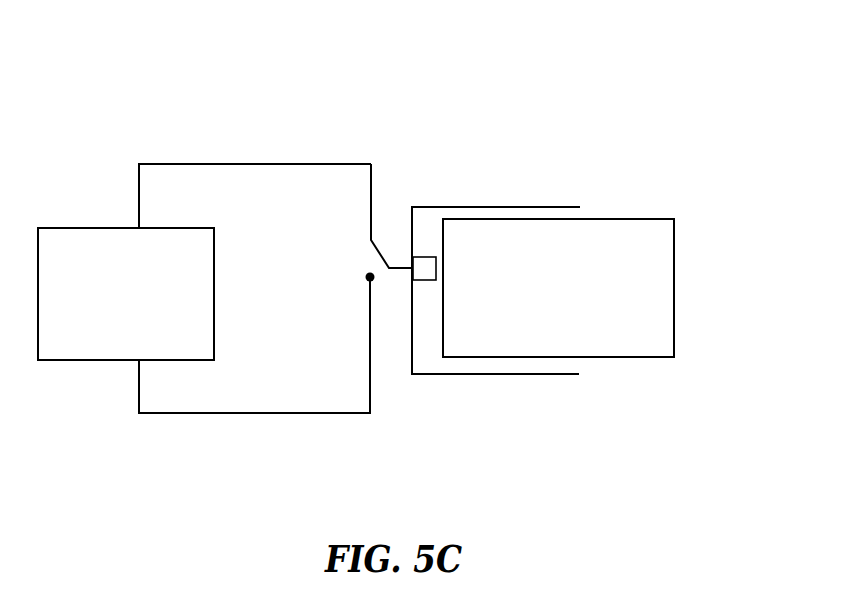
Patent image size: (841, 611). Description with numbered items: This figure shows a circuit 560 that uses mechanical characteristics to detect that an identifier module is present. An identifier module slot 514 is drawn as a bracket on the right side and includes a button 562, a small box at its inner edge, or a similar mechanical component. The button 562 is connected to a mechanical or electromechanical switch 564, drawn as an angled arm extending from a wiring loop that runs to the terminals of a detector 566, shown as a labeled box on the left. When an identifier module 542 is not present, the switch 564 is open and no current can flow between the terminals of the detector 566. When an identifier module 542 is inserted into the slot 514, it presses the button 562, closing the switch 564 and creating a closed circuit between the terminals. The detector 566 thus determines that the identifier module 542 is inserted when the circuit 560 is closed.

The detector 566 is at (126, 294).
The switch 564 is at (381, 252).
The button 562 is at (423, 255).
The identifier module slot 514 is at (513, 204).
The identifier module 542 is at (639, 218).
The circuit 560 is at (554, 290).